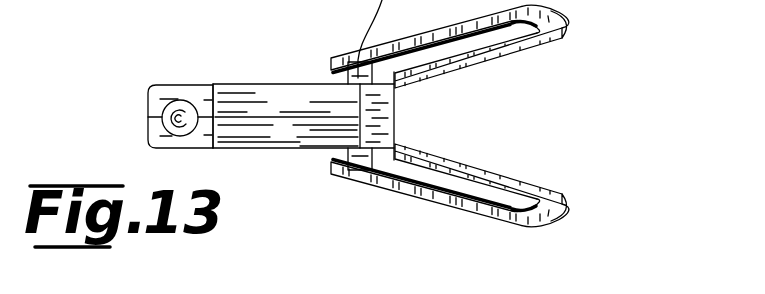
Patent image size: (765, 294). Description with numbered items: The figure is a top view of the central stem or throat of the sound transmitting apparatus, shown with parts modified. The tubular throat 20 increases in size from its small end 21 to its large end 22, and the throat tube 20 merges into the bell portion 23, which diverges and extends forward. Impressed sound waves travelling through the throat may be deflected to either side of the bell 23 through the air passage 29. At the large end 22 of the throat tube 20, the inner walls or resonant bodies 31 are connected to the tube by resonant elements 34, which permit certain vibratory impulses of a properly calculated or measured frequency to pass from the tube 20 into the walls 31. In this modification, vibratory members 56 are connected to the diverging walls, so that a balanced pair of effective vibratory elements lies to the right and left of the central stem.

The tubular throat 20 is at (284, 108).
The end of the throat 21 is at (217, 111).
The end of the throat 22 is at (357, 112).
The bell portion 23 is at (489, 58).
The air passage 29 is at (189, 112).
The inner walls or resonant bodies 31 is at (426, 125).
The resonant element 34 is at (357, 172).
The vibratory member 56 is at (533, 8).